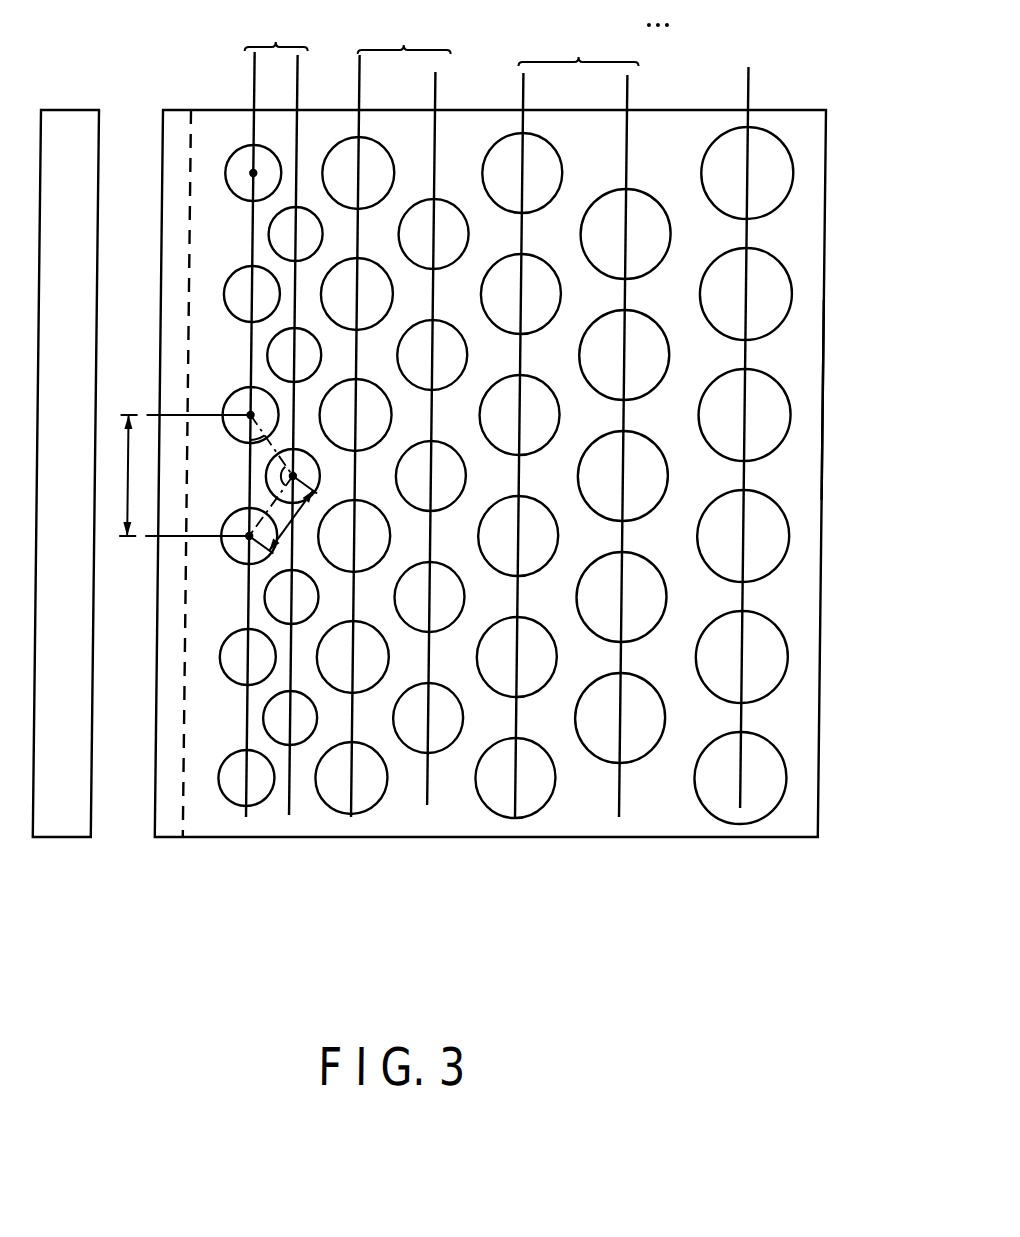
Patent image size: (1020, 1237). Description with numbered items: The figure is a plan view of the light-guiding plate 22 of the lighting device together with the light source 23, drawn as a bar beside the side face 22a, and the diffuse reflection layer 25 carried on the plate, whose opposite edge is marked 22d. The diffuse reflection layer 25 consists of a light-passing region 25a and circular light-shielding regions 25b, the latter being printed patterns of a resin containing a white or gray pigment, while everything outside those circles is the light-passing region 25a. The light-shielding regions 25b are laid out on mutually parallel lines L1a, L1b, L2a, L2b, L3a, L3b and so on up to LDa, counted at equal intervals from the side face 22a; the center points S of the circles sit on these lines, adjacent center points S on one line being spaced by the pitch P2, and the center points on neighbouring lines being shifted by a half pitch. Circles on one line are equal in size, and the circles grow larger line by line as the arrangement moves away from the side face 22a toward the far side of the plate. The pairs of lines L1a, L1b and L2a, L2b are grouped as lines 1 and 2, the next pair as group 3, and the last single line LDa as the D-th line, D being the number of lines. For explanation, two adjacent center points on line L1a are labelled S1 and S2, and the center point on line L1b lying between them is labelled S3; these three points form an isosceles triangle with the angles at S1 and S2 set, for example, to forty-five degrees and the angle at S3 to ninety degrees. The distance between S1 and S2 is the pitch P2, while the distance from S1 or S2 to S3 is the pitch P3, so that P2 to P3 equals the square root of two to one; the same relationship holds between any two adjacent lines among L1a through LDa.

The light-guiding plate 22 is at (810, 738).
The side face 22a is at (163, 812).
The edge of plate 22d is at (829, 396).
The light source 23 is at (71, 818).
The diffuse reflection layer 25 is at (744, 906).
The light-passing region 25a is at (674, 818).
The light-shielding regions 25b is at (735, 805).
The line L1a is at (254, 817).
The line L1b is at (297, 815).
The line L2a is at (359, 815).
The line L2b is at (432, 808).
The line L3a is at (523, 818).
The line L3b is at (627, 800).
The line LDa is at (750, 790).
The center points S is at (252, 170).
The center point S1 is at (234, 394).
The center point S2 is at (241, 554).
The center point S3 is at (309, 471).
The pitch P2 is at (131, 463).
The pitch P3 is at (301, 525).
The line L1 1 is at (277, 26).
The line L2 2 is at (405, 28).
The third column group 3 is at (578, 38).
The number of lines D is at (748, 68).